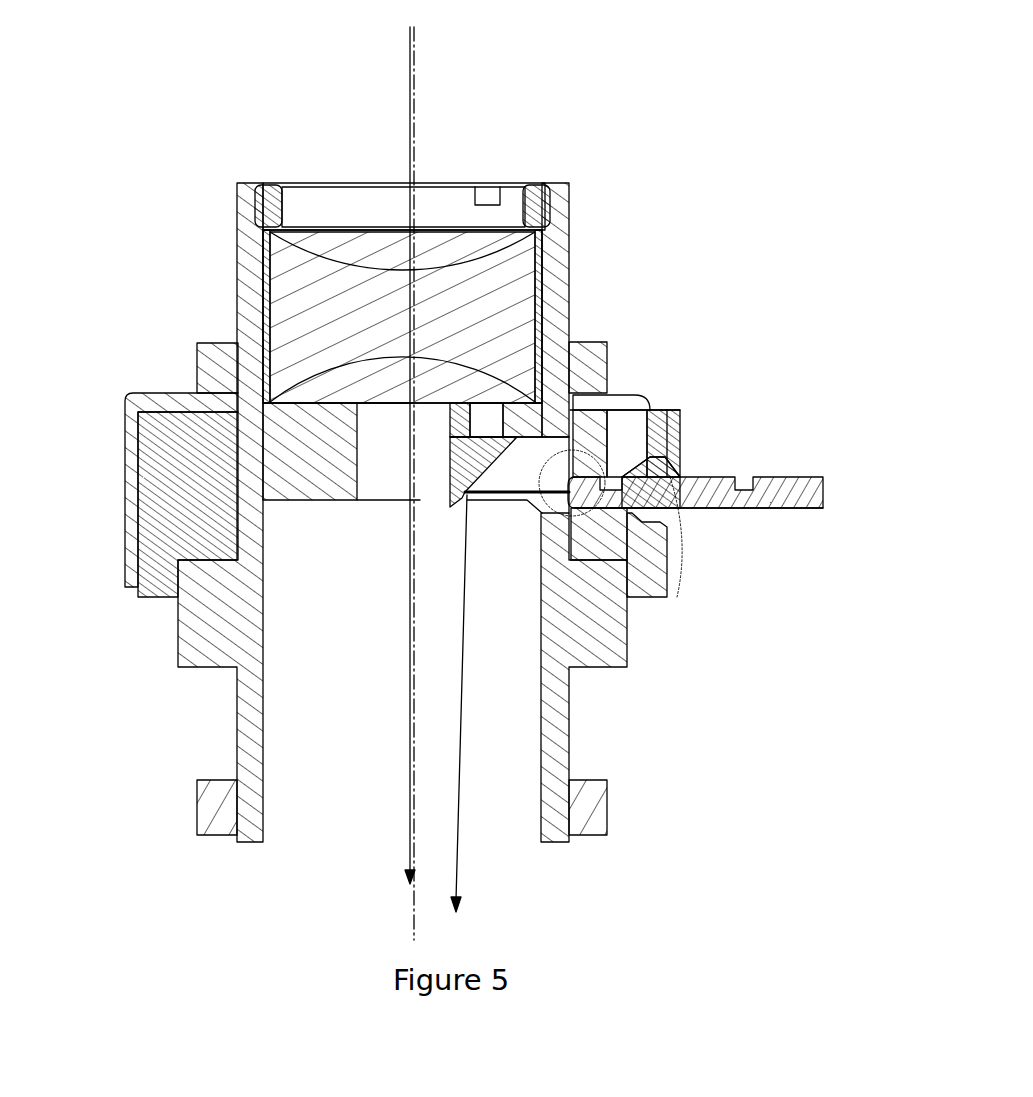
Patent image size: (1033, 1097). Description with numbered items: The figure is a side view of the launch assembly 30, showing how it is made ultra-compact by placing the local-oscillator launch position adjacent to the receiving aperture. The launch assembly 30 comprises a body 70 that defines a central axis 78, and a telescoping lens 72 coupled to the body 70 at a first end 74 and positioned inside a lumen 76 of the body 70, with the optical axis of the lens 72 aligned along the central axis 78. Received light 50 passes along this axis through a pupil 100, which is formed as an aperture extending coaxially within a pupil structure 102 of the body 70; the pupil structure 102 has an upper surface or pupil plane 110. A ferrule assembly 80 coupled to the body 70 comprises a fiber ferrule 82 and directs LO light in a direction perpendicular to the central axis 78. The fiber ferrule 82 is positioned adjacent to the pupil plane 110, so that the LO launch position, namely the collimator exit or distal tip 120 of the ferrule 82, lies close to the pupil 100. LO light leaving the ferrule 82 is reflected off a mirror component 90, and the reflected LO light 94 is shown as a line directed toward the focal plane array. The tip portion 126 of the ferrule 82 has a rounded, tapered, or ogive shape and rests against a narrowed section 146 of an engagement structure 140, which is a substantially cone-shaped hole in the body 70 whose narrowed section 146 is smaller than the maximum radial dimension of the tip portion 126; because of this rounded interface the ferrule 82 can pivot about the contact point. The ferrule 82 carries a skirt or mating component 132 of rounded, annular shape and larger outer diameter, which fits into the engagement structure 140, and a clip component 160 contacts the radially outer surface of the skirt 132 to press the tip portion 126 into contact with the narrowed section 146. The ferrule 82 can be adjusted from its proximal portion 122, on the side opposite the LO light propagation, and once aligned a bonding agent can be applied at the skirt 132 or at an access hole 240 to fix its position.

The launch assembly 30 is at (638, 103).
The received light 50 is at (408, 853).
The body 70 is at (597, 657).
The telescoping lens 72 is at (497, 290).
The first end 74 is at (568, 300).
The lumen 76 is at (422, 240).
The central axis 78 is at (416, 67).
The ferrule assembly 80 is at (676, 349).
The fiber ferrule 82 is at (737, 512).
The mirror component 90 is at (477, 457).
The reflected LO light 94 is at (462, 858).
The pupil 100 is at (378, 442).
The pupil structure 102 is at (313, 475).
The pupil plane 110 is at (313, 400).
The distal tip 120 is at (556, 487).
The proximal portion 122 is at (793, 490).
The tip portion 126 is at (583, 487).
The skirt or mating component 132 is at (660, 485).
The engagement structure 140 is at (623, 532).
The narrowed section 146 is at (575, 495).
The clip component 160 is at (128, 398).
The access hole 240 is at (619, 425).